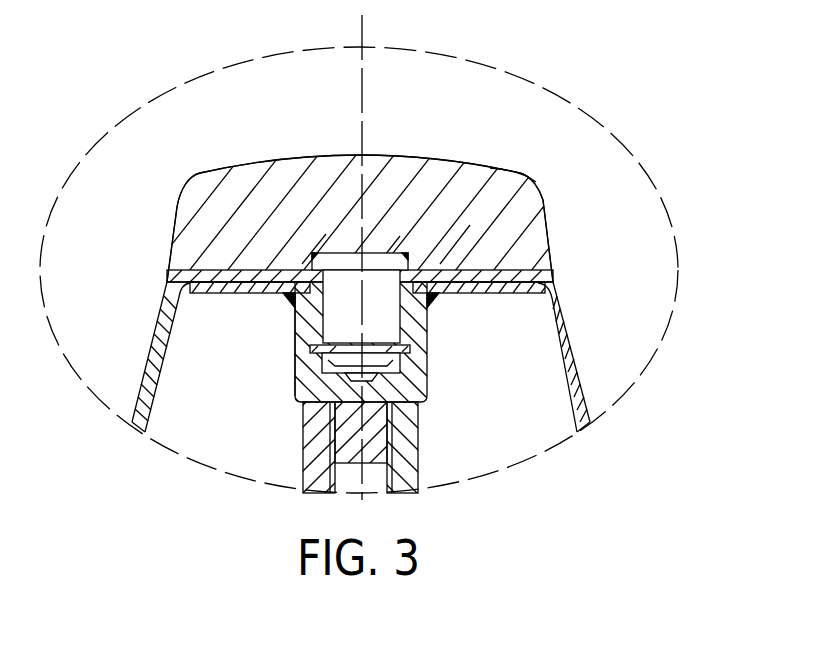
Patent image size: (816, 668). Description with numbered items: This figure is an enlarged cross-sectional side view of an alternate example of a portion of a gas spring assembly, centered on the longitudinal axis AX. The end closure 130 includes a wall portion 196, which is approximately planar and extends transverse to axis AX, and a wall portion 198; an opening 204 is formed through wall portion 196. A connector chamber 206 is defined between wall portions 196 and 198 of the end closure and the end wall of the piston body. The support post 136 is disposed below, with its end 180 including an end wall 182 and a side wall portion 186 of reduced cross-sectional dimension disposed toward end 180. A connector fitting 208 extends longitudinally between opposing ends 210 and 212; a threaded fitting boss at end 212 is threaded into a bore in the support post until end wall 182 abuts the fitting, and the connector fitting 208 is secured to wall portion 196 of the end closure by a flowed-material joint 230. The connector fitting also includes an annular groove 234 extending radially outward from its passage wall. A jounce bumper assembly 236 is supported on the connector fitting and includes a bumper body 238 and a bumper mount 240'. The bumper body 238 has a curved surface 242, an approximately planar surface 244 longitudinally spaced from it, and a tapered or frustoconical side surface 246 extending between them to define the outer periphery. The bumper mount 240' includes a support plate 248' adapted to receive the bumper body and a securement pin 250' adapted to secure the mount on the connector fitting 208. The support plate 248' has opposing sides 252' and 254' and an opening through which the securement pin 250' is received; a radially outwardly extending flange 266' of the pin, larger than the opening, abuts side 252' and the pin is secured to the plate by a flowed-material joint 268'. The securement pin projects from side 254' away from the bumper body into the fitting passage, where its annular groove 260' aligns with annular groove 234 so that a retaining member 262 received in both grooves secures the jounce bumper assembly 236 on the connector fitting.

The axis AX is at (362, 65).
The end closure 130 is at (586, 382).
The support post 136 is at (300, 469).
The end of support post 180 is at (300, 431).
The end wall of support post 182 is at (420, 448).
The side wall portion 186 is at (419, 412).
The wall portion 196 is at (178, 281).
The wall portion 198 is at (150, 353).
The opening 204 is at (200, 175).
The connector chamber 206 is at (191, 404).
The connector fitting 208 is at (430, 388).
The end of connector fitting 210 is at (293, 331).
The end of connector fitting 212 is at (293, 383).
The flowed-material joint 230 is at (295, 298).
The annular groove 234 is at (372, 352).
The jounce bumper assembly 236 is at (546, 176).
The bumper body 238 is at (496, 165).
The bumper mount 240' is at (557, 241).
The surface 242 is at (220, 170).
The surface 244 is at (530, 198).
The side surface 246 is at (177, 218).
The support plate 248' is at (453, 186).
The securement pin 250' is at (411, 306).
The side of support plate 252' is at (192, 304).
The side of support plate 254' is at (518, 263).
The annular groove 260' is at (323, 189).
The retaining member 262 is at (392, 347).
The flange 266' is at (400, 171).
The flowed-material joint 268' is at (304, 171).